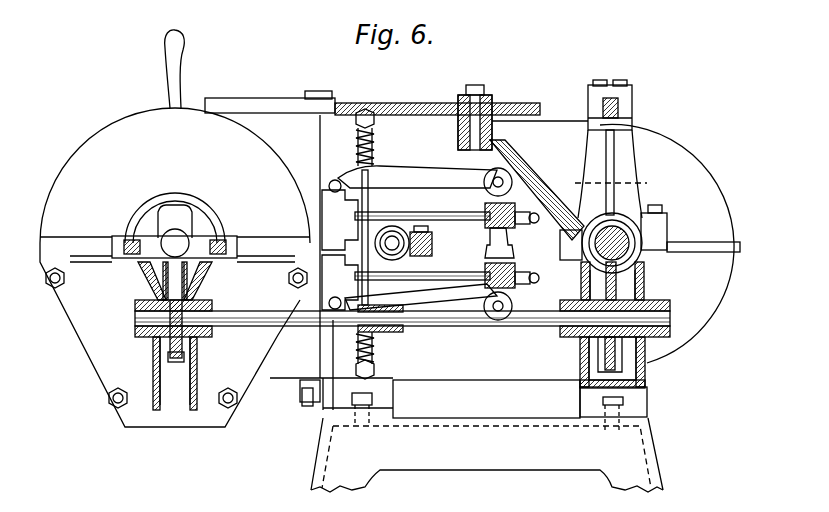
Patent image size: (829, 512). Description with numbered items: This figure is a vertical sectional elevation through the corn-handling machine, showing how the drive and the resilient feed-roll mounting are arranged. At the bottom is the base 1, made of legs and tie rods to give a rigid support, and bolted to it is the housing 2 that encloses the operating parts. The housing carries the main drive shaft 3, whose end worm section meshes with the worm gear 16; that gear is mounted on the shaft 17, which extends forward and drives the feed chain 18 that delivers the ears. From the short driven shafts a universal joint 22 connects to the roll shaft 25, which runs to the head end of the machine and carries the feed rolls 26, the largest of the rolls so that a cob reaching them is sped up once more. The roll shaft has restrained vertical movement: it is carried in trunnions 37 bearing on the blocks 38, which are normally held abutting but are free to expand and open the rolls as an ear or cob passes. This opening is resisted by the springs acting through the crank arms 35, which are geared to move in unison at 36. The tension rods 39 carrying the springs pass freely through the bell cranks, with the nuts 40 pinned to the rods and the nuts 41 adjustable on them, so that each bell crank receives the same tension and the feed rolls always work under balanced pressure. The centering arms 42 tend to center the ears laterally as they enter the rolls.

The base 1 is at (487, 455).
The housing 2 is at (458, 381).
The main drive shaft 3 is at (618, 236).
The worm gear 16 is at (603, 346).
The shaft 17 is at (470, 320).
The feed chain 18 is at (178, 362).
The universal joint 22 is at (536, 228).
The roll shaft 25 is at (465, 222).
The feed rolls 26 is at (166, 218).
The crank arms 35 is at (428, 170).
The gearing of crank arms 36 is at (496, 250).
The trunnions 37 is at (334, 180).
The blocks 38 is at (340, 250).
The tension rods 39 is at (369, 197).
The nuts 40 is at (377, 366).
The nuts 41 is at (375, 122).
The centering arms 42 is at (145, 246).